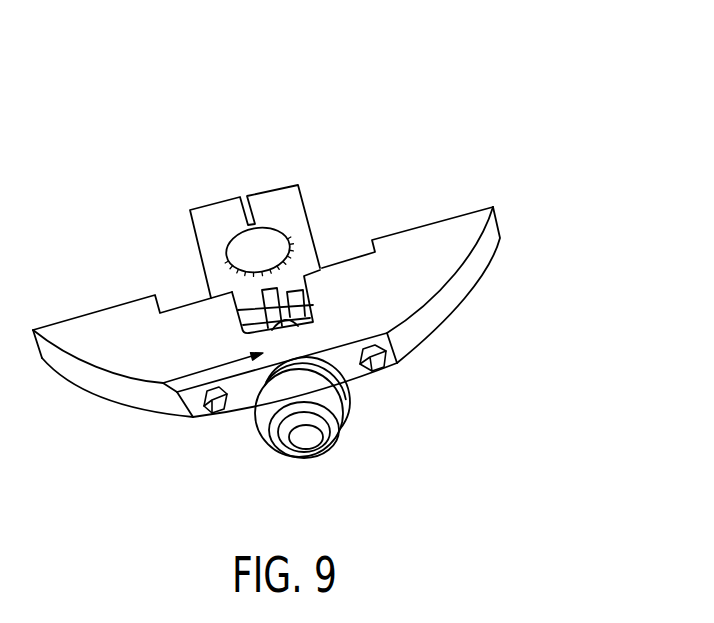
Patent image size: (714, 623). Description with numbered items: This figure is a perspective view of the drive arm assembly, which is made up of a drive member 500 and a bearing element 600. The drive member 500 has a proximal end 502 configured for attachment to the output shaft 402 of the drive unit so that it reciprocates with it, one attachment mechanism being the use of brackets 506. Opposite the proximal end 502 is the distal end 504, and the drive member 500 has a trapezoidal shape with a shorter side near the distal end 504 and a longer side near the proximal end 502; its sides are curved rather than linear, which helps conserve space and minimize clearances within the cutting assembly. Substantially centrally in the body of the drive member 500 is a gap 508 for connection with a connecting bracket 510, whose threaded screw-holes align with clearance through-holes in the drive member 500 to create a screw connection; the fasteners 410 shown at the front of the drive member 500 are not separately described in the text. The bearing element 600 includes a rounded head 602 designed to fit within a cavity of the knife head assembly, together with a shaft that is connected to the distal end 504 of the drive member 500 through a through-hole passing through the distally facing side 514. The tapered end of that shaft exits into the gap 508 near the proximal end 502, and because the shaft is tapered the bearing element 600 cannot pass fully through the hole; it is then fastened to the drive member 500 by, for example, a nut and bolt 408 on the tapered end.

The output shaft 402 is at (271, 243).
The nut 408 is at (262, 305).
The bolts 410 is at (215, 407).
The drive member 500 is at (458, 230).
The proximal end 502 is at (323, 262).
The distal end 504 is at (137, 405).
The brackets 506 is at (367, 153).
The gap 508 is at (311, 300).
The connecting bracket 510 is at (257, 203).
The distally facing side 514 is at (243, 392).
The bearing element 600 is at (380, 422).
The rounded head 602 is at (308, 440).